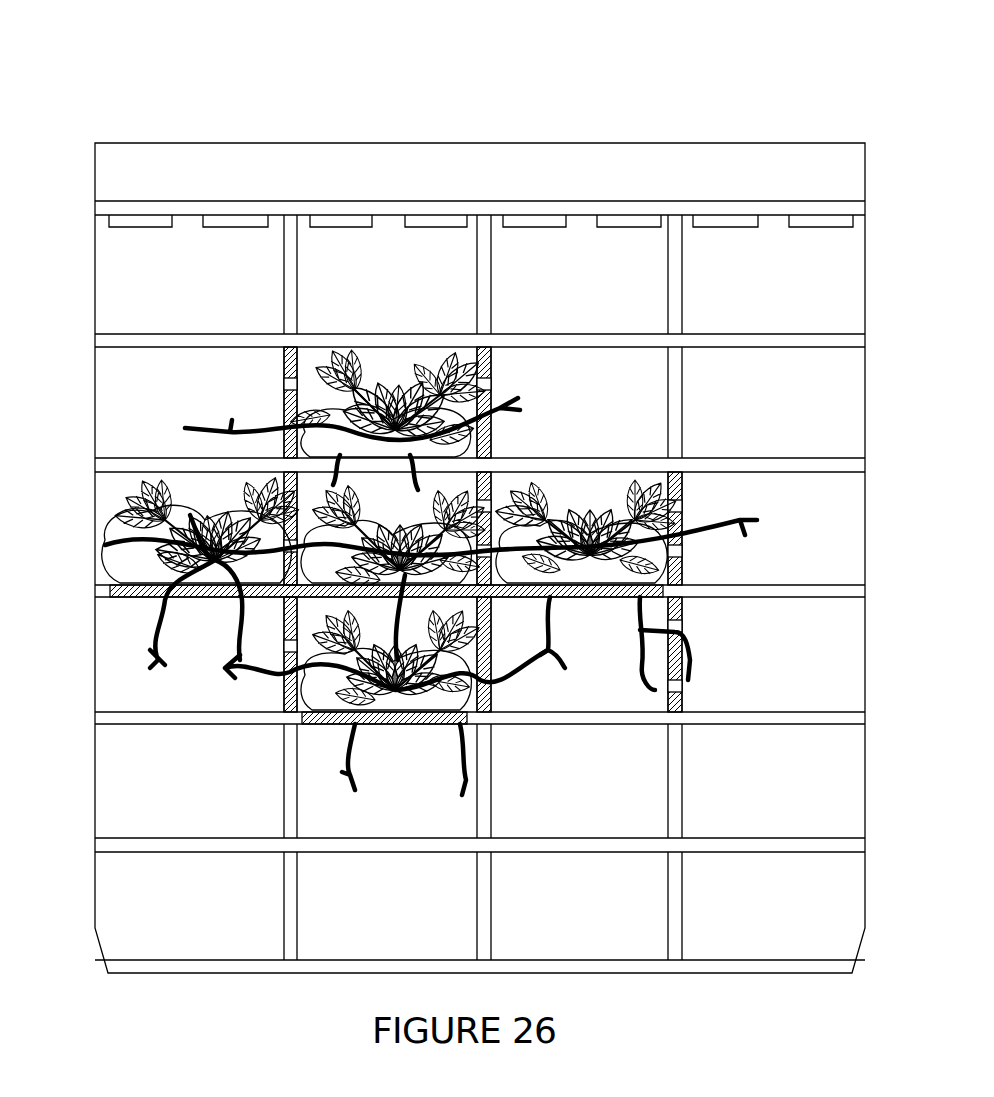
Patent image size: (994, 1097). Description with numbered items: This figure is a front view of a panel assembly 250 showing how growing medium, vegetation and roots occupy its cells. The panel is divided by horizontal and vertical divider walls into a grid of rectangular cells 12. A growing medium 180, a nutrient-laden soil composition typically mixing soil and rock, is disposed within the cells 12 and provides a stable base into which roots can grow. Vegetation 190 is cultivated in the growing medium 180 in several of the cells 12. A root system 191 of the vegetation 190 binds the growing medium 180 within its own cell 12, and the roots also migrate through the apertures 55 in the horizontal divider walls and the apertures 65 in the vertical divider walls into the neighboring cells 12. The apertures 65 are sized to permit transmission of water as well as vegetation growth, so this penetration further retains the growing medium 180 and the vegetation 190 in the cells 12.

The plant growing system 250 is at (402, 88).
The cell 12 is at (405, 289).
The aperture in vertical divider wall 65 is at (284, 392).
The vegetation 190 is at (103, 499).
The growing medium 180 is at (117, 552).
The aperture in horizontal divider wall 55 is at (156, 626).
The root system 191 is at (348, 740).